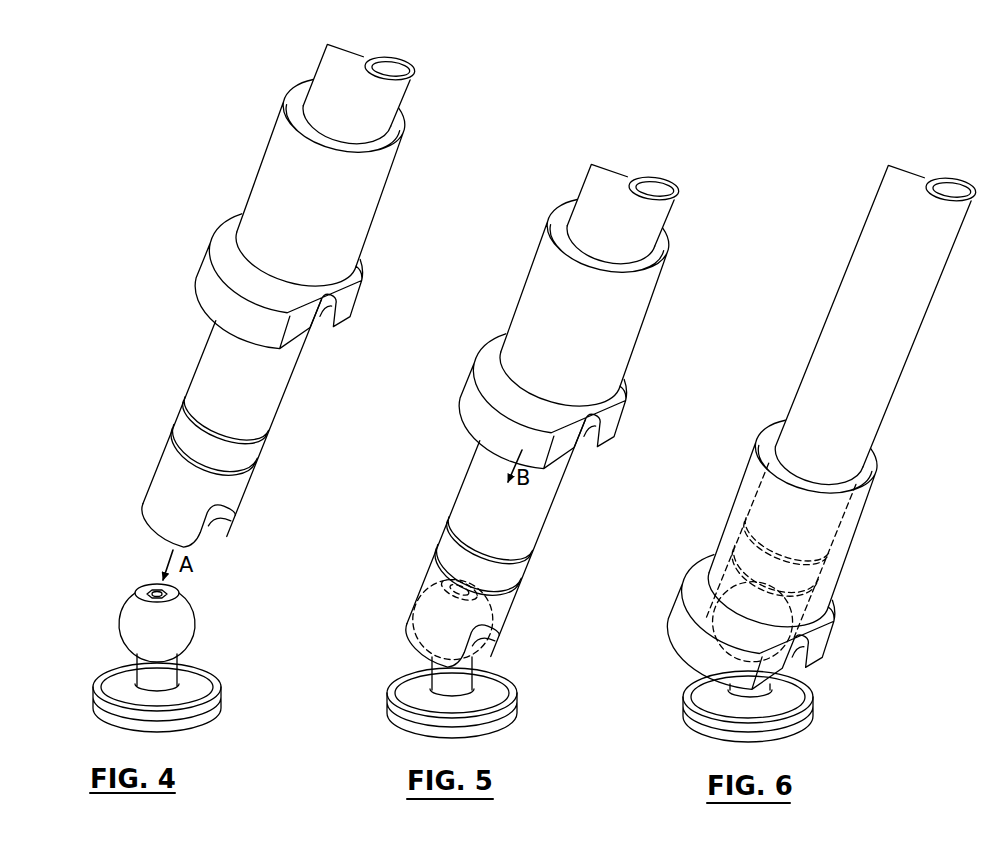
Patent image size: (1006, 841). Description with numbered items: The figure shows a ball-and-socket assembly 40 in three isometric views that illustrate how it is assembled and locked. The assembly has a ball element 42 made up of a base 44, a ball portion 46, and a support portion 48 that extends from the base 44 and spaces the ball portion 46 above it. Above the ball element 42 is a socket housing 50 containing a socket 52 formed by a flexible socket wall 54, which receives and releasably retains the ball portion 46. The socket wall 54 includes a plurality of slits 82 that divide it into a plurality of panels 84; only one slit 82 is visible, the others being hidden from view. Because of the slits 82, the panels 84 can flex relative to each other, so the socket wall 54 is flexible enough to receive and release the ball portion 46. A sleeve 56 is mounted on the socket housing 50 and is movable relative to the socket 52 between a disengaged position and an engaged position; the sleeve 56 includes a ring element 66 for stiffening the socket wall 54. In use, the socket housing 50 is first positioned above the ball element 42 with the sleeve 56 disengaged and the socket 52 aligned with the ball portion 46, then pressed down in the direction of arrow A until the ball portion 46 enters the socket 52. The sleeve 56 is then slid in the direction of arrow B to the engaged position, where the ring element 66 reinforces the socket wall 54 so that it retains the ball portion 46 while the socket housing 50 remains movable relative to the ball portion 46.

In FIG. 4, the ball-and-socket assembly 40 is at (128, 365).
In FIG. 5, the ball-and-socket assembly 40 is at (418, 525).
In FIG. 4, the ball element 42 is at (83, 630).
In FIG. 5, the ball element 42 is at (393, 675).
In FIG. 6, the ball element 42 is at (677, 690).
In FIG. 4, the base 44 is at (220, 690).
In FIG. 5, the base 44 is at (517, 687).
In FIG. 6, the base 44 is at (813, 700).
In FIG. 4, the ball portion 46 is at (195, 615).
In FIG. 5, the ball portion 46 is at (478, 668).
In FIG. 6, the ball portion 46 is at (767, 673).
In FIG. 4, the support portion 48 is at (180, 660).
In FIG. 5, the support portion 48 is at (433, 672).
In FIG. 4, the socket housing 50 is at (273, 458).
In FIG. 5, the socket housing 50 is at (523, 585).
In FIG. 6, the socket housing 50 is at (812, 607).
In FIG. 4, the socket 52 is at (210, 523).
In FIG. 5, the socket 52 is at (481, 641).
In FIG. 4, the flexible socket wall 54 is at (155, 468).
In FIG. 5, the flexible socket wall 54 is at (420, 583).
In FIG. 4, the sleeve 56 is at (246, 192).
In FIG. 5, the sleeve 56 is at (512, 317).
In FIG. 6, the sleeve 56 is at (712, 540).
In FIG. 4, the ring element 66 is at (205, 263).
In FIG. 5, the ring element 66 is at (465, 383).
In FIG. 6, the ring element 66 is at (680, 595).
In FIG. 4, the slits 82 is at (173, 492).
In FIG. 5, the slits 82 is at (428, 627).
In FIG. 4, the panels 84 is at (142, 513).
In FIG. 5, the panels 84 is at (407, 632).